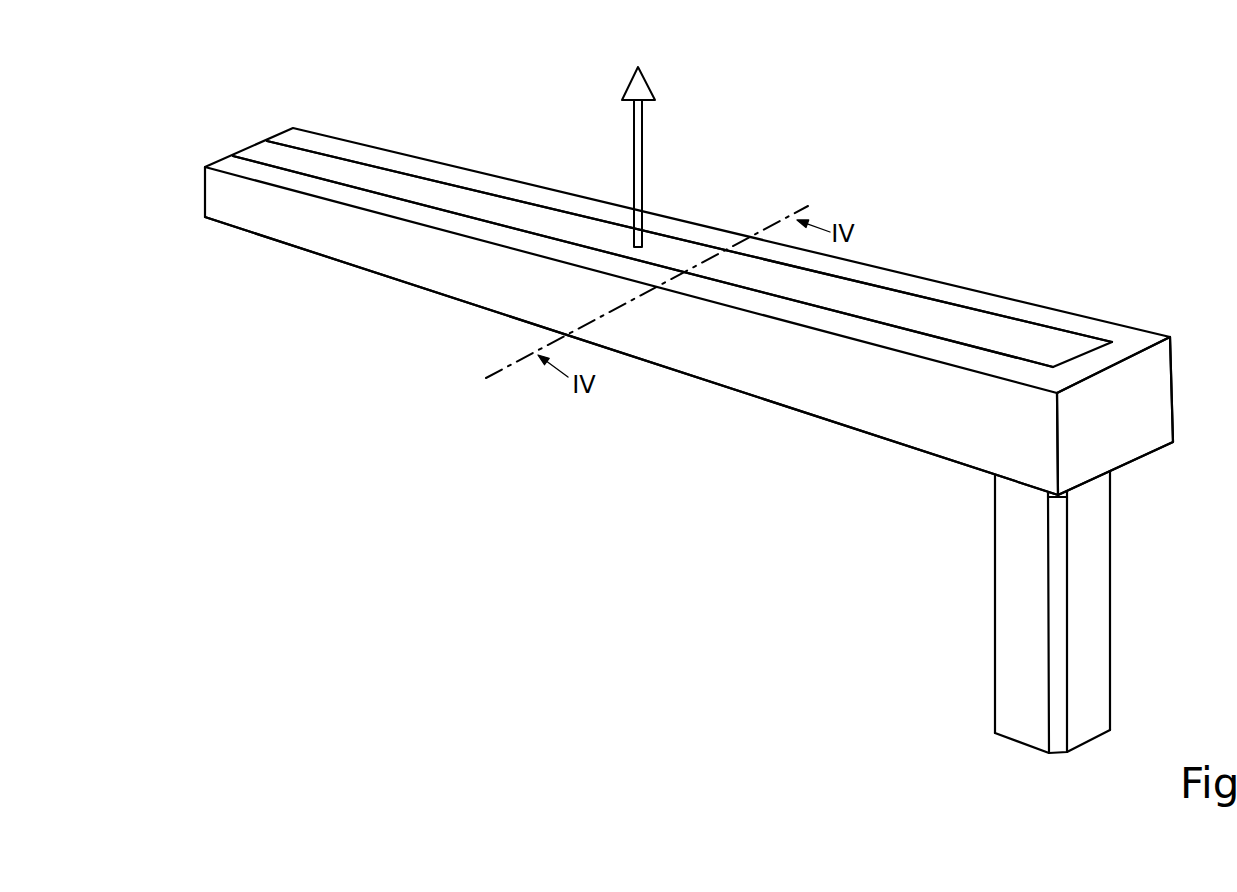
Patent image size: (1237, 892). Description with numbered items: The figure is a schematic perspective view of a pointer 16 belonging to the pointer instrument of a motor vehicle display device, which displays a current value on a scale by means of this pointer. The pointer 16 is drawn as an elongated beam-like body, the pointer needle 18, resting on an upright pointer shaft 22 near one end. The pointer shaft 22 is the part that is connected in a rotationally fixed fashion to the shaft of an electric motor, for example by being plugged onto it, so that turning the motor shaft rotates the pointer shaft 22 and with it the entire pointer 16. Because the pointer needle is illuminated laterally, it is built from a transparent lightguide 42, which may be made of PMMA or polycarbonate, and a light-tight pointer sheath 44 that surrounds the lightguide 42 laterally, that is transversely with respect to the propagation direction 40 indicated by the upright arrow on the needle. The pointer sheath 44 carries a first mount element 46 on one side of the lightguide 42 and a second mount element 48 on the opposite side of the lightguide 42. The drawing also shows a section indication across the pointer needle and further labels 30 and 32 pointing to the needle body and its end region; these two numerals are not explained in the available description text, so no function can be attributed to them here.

The pointer 16 is at (1144, 191).
The pointer needle 18 is at (508, 433).
The pointer shaft 22 is at (1100, 597).
The carrier beam 30 is at (356, 119).
The beam end face 32 is at (1168, 288).
The propagation direction 40 is at (642, 137).
The lightguide 42 is at (858, 286).
The pointer sheath 44 is at (925, 285).
The first mount element 46 is at (732, 237).
The second mount element 48 is at (698, 362).